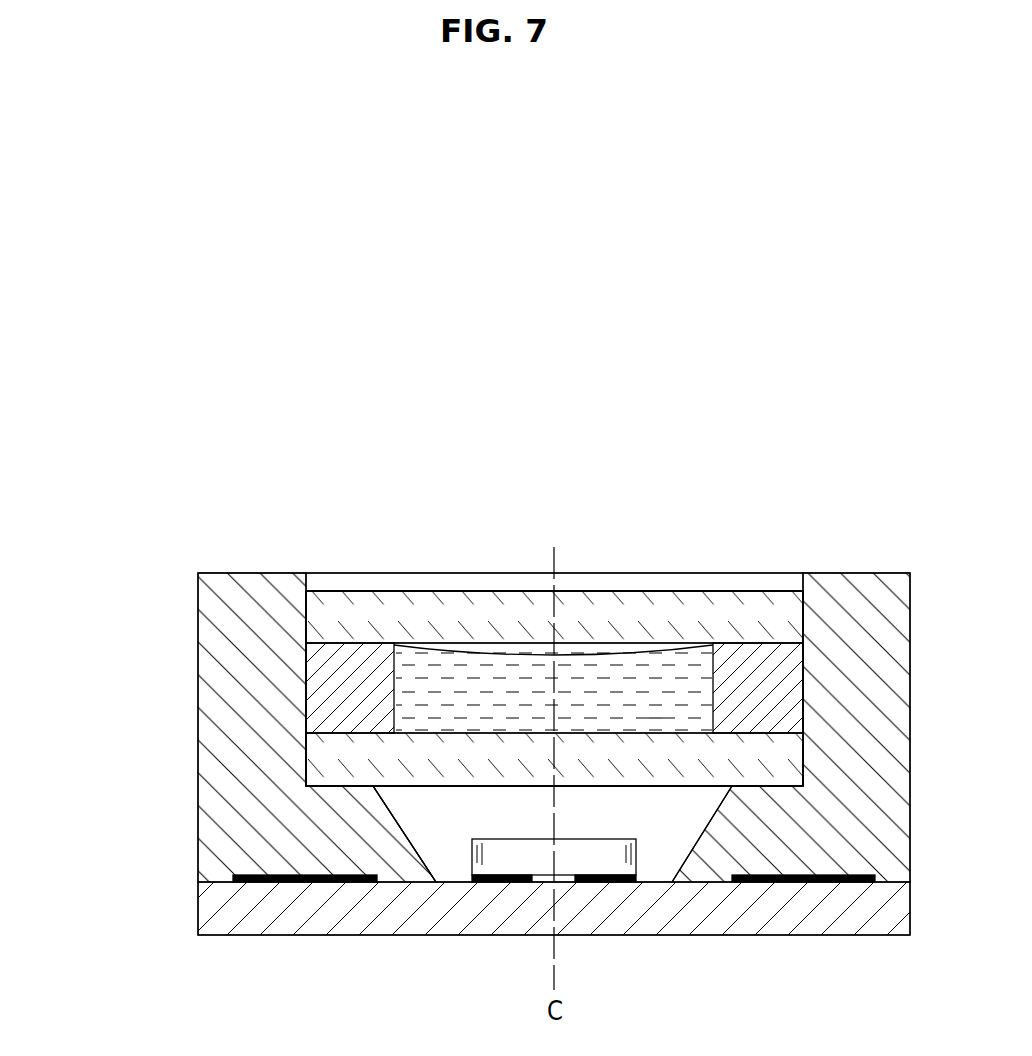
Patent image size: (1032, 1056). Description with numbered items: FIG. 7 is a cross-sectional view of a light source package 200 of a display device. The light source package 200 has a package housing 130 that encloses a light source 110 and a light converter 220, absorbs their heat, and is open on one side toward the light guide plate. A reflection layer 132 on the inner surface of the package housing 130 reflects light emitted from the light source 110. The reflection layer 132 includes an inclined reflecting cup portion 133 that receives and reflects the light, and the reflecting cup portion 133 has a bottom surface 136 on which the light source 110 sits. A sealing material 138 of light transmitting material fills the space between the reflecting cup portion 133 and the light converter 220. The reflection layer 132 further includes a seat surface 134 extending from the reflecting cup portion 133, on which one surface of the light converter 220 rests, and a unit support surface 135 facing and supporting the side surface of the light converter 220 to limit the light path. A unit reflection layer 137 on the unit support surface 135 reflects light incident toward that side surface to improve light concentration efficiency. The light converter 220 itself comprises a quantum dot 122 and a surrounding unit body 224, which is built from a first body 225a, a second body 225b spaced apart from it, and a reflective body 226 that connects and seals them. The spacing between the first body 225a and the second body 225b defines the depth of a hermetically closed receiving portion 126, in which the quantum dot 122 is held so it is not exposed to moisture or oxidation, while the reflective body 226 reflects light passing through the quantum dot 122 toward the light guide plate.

The light source package 200 is at (800, 474).
The package housing 130 is at (867, 592).
The light converter 220 is at (366, 580).
The quantum dot 122 is at (452, 675).
The unit body 224 is at (462, 597).
The first body 225a is at (525, 608).
The second body 225b is at (587, 762).
The reflective body 226 is at (745, 670).
The unit reflection layer 137 is at (320, 609).
The unit support surface 135 is at (305, 670).
The seat surface 134 is at (360, 785).
The reflecting cup portion 133 is at (409, 838).
The reflection layer 132 is at (112, 608).
The sealing material 138 is at (443, 833).
The light source 110 is at (472, 861).
The bottom surface 136 is at (667, 882).
The receiving portion 126 is at (658, 717).